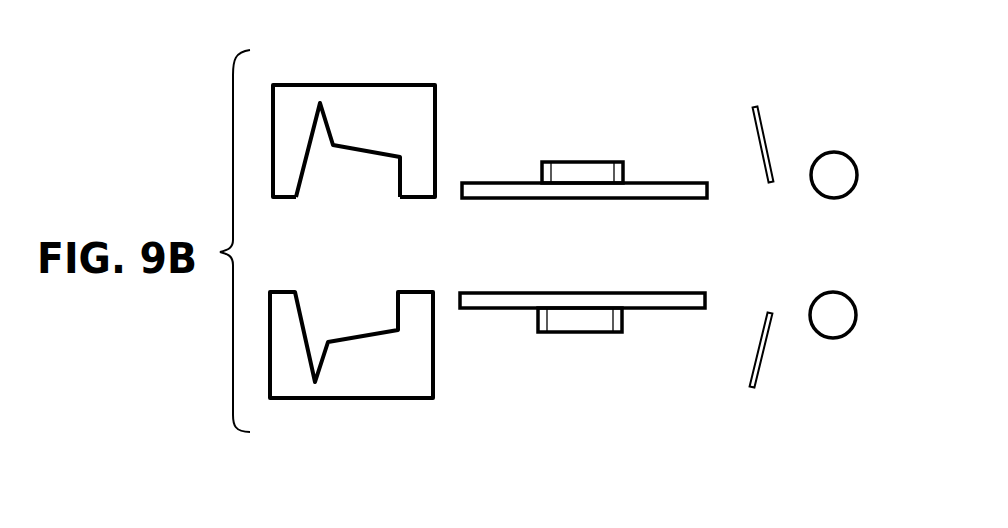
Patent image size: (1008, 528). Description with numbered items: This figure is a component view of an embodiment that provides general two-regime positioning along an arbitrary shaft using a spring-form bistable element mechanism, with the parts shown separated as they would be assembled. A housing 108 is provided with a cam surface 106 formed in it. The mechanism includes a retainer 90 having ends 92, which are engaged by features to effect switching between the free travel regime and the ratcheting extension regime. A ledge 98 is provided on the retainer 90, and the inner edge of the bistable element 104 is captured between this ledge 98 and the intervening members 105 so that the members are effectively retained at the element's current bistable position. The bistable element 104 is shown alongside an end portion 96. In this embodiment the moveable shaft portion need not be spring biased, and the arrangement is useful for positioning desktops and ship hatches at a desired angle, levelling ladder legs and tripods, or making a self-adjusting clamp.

The retainer 90 is at (584, 151).
The ends 92 is at (700, 310).
The pin lower end 96 is at (754, 132).
The ledge 98 is at (550, 193).
The bistable element 104 is at (757, 132).
The intervening members 105 is at (840, 185).
The cam surface 106 is at (372, 152).
The housing 108 is at (288, 105).